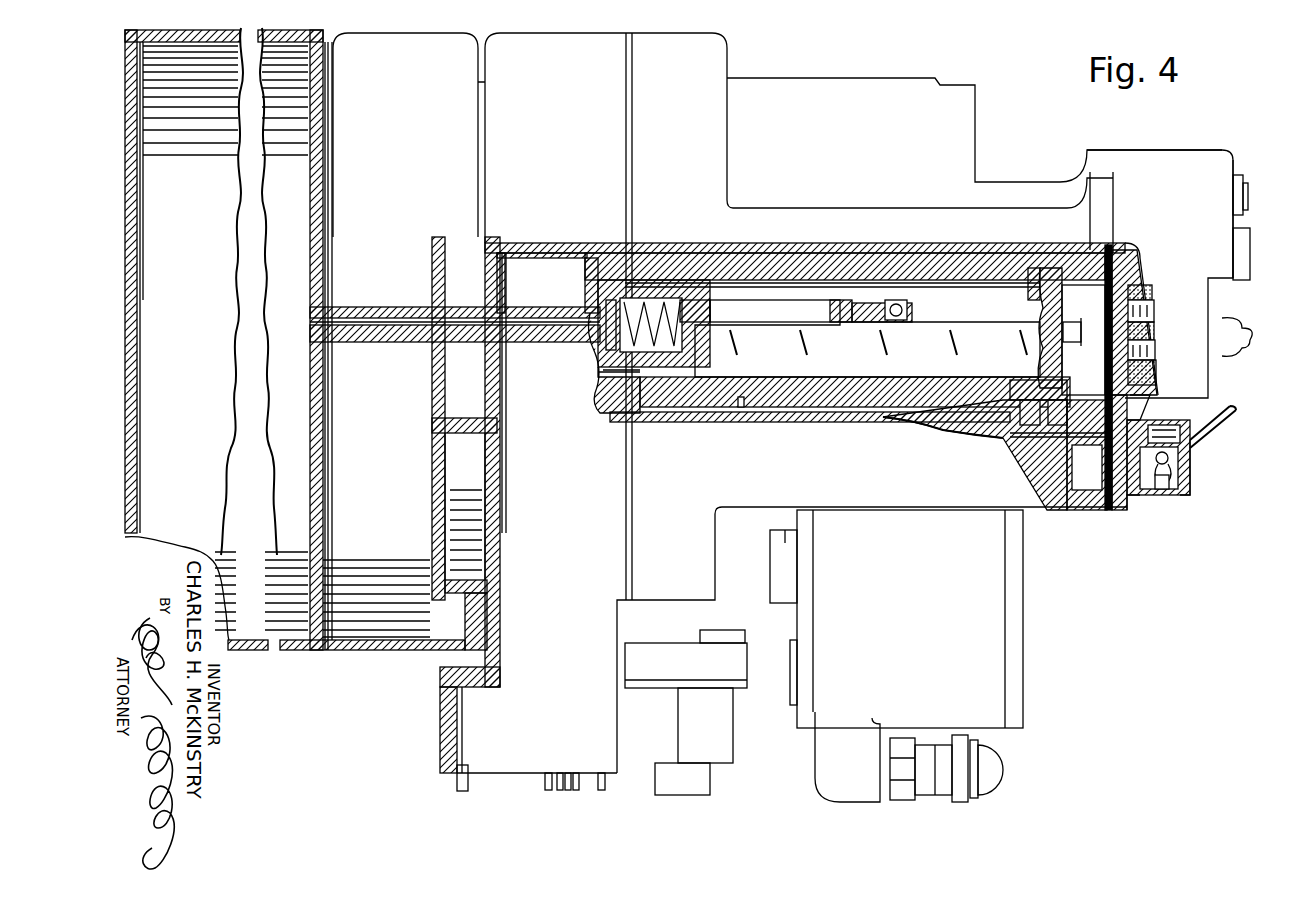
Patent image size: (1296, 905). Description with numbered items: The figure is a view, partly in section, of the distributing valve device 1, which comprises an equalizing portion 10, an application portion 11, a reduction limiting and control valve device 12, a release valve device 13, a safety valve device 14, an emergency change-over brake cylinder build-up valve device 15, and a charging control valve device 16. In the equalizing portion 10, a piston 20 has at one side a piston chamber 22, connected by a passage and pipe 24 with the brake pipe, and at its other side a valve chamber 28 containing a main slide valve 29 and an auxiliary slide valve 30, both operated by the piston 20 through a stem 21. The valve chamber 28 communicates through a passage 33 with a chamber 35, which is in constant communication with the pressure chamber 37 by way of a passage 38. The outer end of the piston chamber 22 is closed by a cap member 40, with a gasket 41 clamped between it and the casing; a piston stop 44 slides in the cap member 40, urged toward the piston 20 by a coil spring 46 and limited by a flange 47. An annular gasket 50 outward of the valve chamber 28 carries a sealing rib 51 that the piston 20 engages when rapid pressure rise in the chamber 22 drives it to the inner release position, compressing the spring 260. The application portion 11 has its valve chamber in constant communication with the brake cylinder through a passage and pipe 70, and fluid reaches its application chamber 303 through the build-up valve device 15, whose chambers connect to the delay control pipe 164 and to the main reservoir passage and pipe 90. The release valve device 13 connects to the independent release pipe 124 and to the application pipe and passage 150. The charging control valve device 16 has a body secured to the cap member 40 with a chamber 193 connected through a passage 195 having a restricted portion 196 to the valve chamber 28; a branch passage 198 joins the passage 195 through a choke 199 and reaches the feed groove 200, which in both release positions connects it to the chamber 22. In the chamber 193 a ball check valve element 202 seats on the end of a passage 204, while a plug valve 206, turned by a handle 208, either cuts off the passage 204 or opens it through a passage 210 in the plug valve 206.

The distributing valve device 1 is at (436, 687).
The equalizing portion 10 is at (1262, 156).
The application portion 11 is at (848, 88).
The reduction limiting and control valve device 12 is at (1024, 574).
The release valve device 13 is at (1024, 696).
The safety valve device 14 is at (1008, 771).
The emergency change-over brake cylinder build-up valve device 15 is at (735, 736).
The charging control valve device 16 is at (1192, 485).
The piston 20 is at (1080, 297).
The stem 21 is at (820, 305).
The piston chamber 22 is at (1118, 270).
The passage and pipe 24 is at (522, 252).
The valve chamber 28 is at (727, 293).
The main slide valve 29 is at (765, 325).
The auxiliary slide valve 30 is at (870, 305).
The passage 33 is at (665, 410).
The chamber 35 is at (603, 370).
The pressure chamber 37 is at (334, 630).
The passage 38 is at (568, 322).
The cap member 40 is at (1203, 160).
The gasket 41 is at (1110, 500).
The piston stop 44 is at (1150, 325).
The coil spring 46 is at (1141, 300).
The flange 47 is at (1154, 352).
The annular gasket 50 is at (1035, 272).
The sealing rib 51 is at (1048, 300).
The passage and pipe 70 is at (577, 791).
The main reservoir passage and pipe 90 is at (561, 791).
The independent release pipe 124 is at (547, 791).
The application pipe and passage 150 is at (460, 785).
The delay control pipe 164 is at (604, 791).
The chamber 193 is at (1182, 440).
The passage 195 is at (1135, 420).
The restricted portion 196 is at (1154, 385).
The branch passage 198 is at (1015, 428).
The choke or restricted portion 199 is at (1012, 442).
The feed groove 200 is at (1045, 478).
The ball check valve element 202 is at (1170, 462).
The passage 204 is at (1085, 492).
The plug valve 206 is at (1183, 496).
The handle 208 is at (1226, 430).
The passage 210 is at (1160, 492).
The spring 260 is at (608, 297).
The application chamber 303 is at (370, 630).